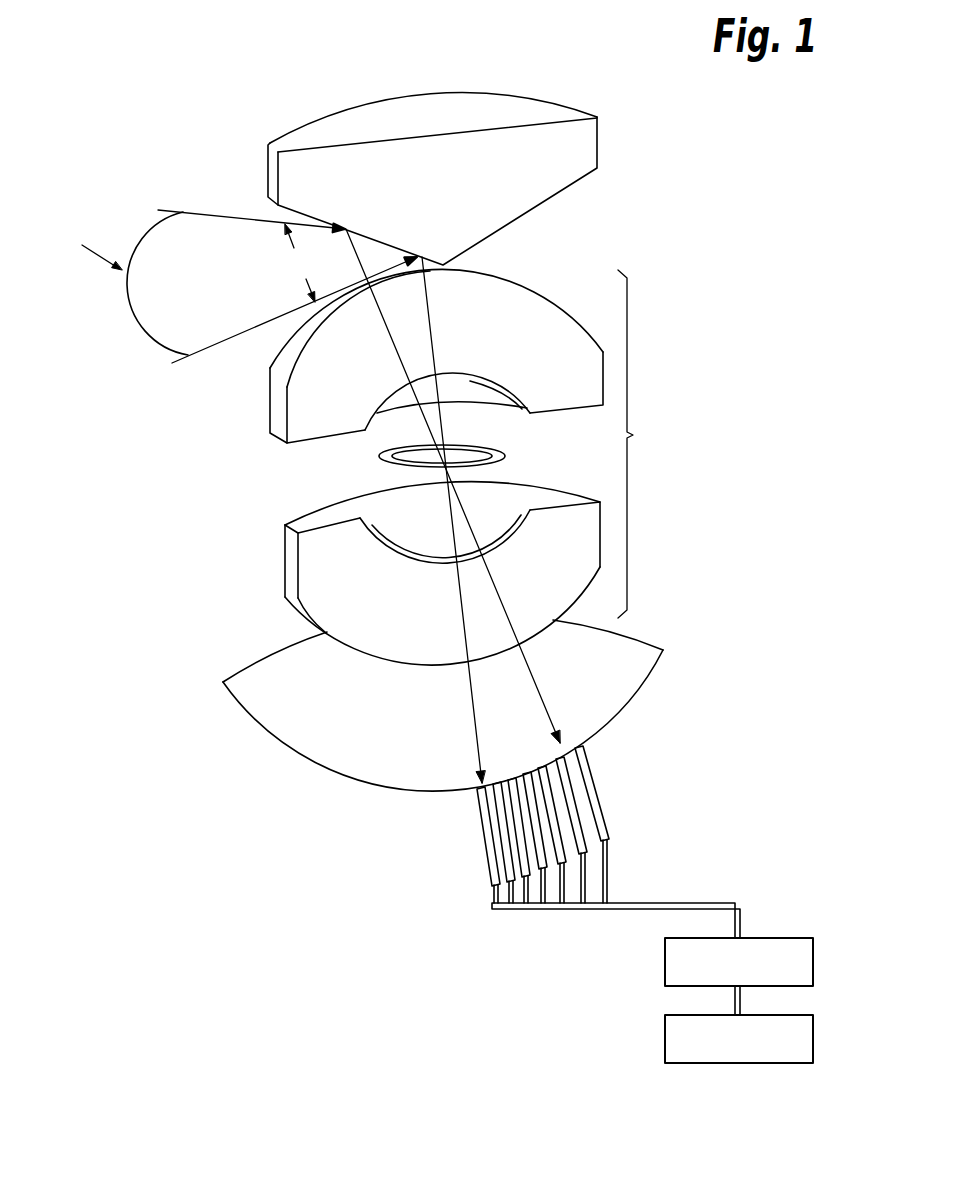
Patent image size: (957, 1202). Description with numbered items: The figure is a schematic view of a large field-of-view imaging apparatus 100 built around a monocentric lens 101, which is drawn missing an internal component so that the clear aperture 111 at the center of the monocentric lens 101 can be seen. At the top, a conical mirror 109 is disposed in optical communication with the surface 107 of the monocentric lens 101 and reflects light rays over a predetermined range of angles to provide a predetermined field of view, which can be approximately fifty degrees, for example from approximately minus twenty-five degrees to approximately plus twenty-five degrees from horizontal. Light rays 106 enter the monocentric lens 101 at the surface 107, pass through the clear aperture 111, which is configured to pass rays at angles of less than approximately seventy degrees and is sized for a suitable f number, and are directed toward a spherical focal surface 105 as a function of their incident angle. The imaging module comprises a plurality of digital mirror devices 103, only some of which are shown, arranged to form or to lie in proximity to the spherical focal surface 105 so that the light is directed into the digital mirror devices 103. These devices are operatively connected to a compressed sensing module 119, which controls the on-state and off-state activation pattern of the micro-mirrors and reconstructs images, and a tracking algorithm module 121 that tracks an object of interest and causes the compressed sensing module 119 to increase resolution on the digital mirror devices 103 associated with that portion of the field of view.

The large field-of-view imaging apparatus 100 is at (710, 257).
The monocentric lens 101 is at (640, 433).
The digital mirror device 103 is at (485, 838).
The spherical focal surface 105 is at (610, 681).
The light rays 106 is at (298, 263).
The surface of the monocentric lens 107 is at (545, 290).
The conical mirror 109 is at (572, 183).
The clear aperture 111 is at (473, 443).
The compressed sensing module 119 is at (752, 977).
The tracking algorithm module 121 is at (752, 1054).